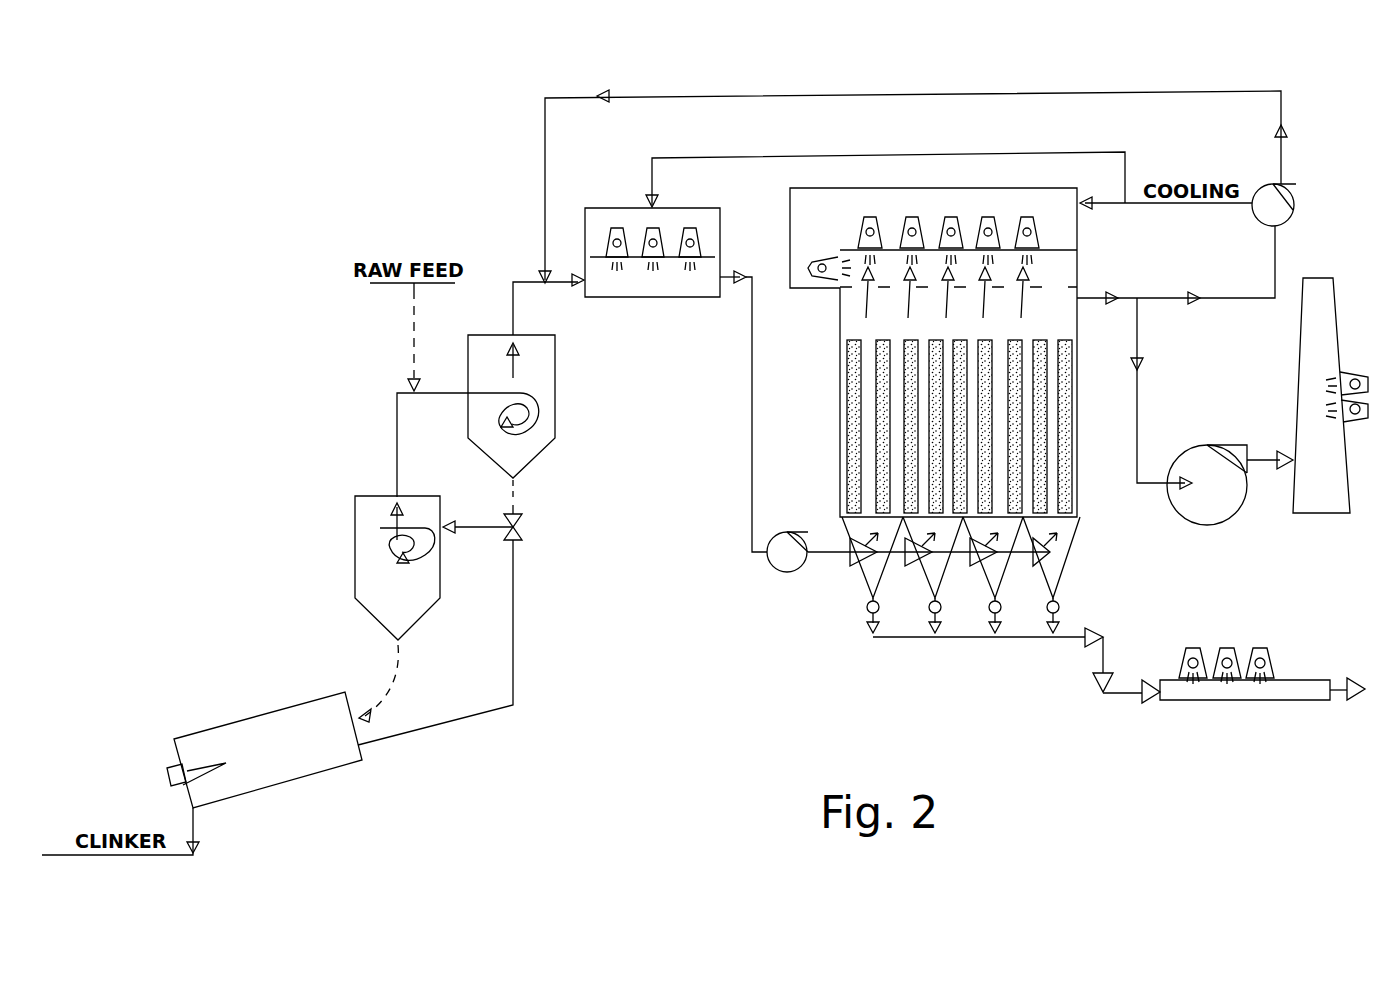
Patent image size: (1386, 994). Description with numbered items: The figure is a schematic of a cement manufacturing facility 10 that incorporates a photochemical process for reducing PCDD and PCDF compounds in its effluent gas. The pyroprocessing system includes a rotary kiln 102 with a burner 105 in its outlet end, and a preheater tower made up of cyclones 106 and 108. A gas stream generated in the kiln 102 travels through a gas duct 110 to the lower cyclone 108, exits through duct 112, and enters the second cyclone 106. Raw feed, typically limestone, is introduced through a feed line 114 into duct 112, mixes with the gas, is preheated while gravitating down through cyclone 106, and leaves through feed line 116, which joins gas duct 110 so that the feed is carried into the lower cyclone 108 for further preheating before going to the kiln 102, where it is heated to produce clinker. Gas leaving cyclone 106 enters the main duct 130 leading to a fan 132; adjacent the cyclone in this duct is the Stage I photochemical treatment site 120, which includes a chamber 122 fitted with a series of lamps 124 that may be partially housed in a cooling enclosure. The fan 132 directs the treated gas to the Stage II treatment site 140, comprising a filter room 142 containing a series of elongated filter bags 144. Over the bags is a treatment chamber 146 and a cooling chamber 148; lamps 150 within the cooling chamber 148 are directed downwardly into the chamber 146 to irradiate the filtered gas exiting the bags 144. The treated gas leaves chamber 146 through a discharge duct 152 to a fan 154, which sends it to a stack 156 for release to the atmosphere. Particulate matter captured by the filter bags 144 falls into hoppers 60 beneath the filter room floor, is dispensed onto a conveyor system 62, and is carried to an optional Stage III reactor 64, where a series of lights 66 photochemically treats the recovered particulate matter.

The cement manufacturing facility 10 is at (413, 169).
The hoppers 60 is at (927, 577).
The conveyor system 62 is at (982, 637).
The reactor 64 is at (1262, 683).
The lights 66 is at (1268, 650).
The rotary kiln 102 is at (303, 777).
The burner 105 is at (197, 772).
The cyclone 106 is at (553, 398).
The cyclone 108 is at (355, 558).
The gas duct 110 is at (513, 630).
The duct 112 is at (397, 442).
The feed line 114 is at (412, 320).
The feed line 116 is at (515, 495).
The Stage I photochemical treatment site 120 is at (676, 288).
The chamber 122 is at (690, 297).
The lamps 124 is at (685, 228).
The main duct 130 is at (512, 316).
The fan 132 is at (787, 566).
The Stage II treatment site 140 is at (963, 323).
The filter room 142 is at (1085, 465).
The filter bags 144 is at (850, 398).
The treatment chamber 146 is at (986, 193).
The cooling chamber 148 is at (986, 212).
The lamps 150 is at (1027, 215).
The discharge duct 152 is at (1138, 388).
The fan 154 is at (1222, 502).
The stack 156 is at (1300, 316).